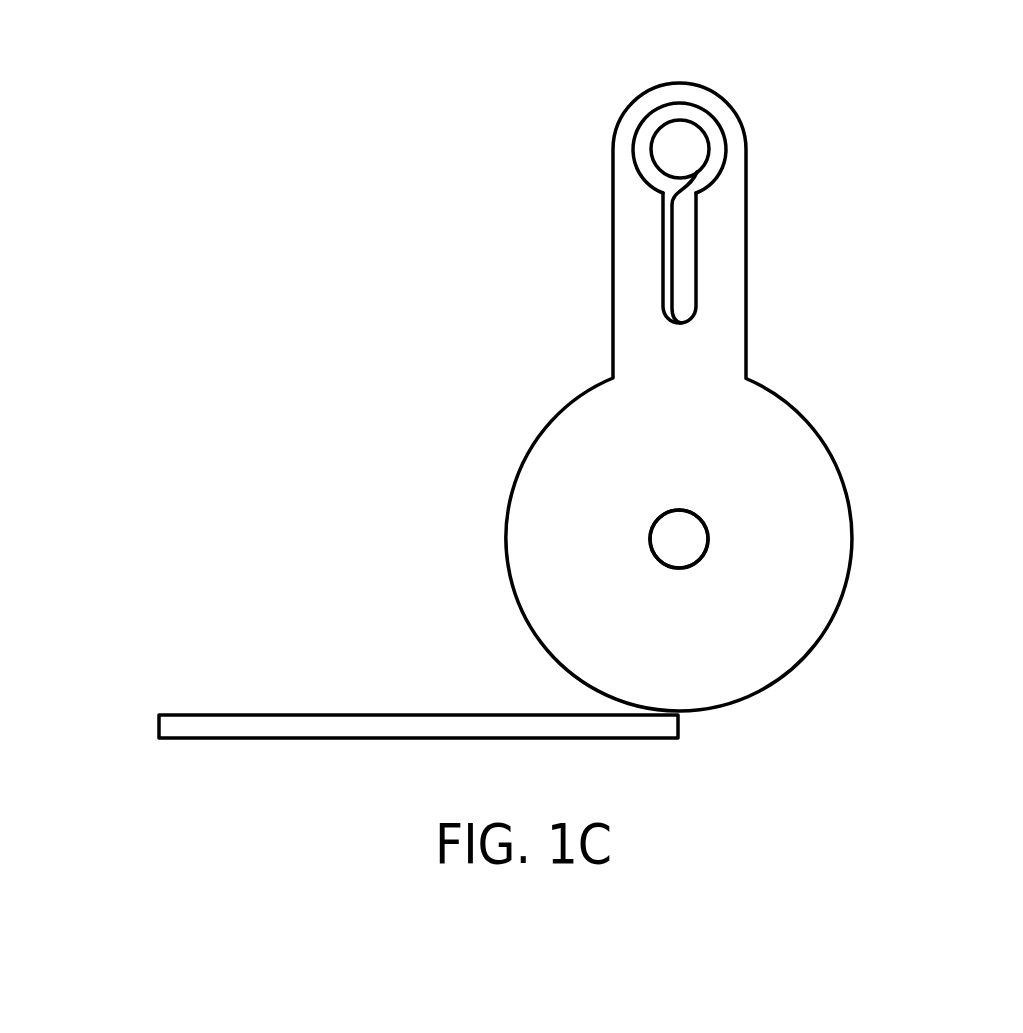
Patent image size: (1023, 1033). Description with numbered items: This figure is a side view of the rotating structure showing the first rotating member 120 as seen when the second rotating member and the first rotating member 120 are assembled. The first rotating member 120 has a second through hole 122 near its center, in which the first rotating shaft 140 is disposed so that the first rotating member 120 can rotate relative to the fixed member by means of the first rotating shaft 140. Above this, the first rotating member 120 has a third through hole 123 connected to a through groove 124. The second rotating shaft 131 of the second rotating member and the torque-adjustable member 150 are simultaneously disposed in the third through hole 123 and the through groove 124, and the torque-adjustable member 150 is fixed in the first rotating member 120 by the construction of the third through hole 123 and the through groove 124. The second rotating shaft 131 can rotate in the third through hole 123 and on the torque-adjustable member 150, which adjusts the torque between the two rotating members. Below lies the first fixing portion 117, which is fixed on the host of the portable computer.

The first fixing portion 117 is at (213, 727).
The first rotating member 120 is at (800, 663).
The second through hole 122 is at (708, 540).
The third through hole 123 is at (727, 148).
The through groove 124 is at (696, 252).
The second rotating shaft 131 is at (678, 142).
The first rotating shaft 140 is at (672, 542).
The torque-adjustable member 150 is at (707, 126).